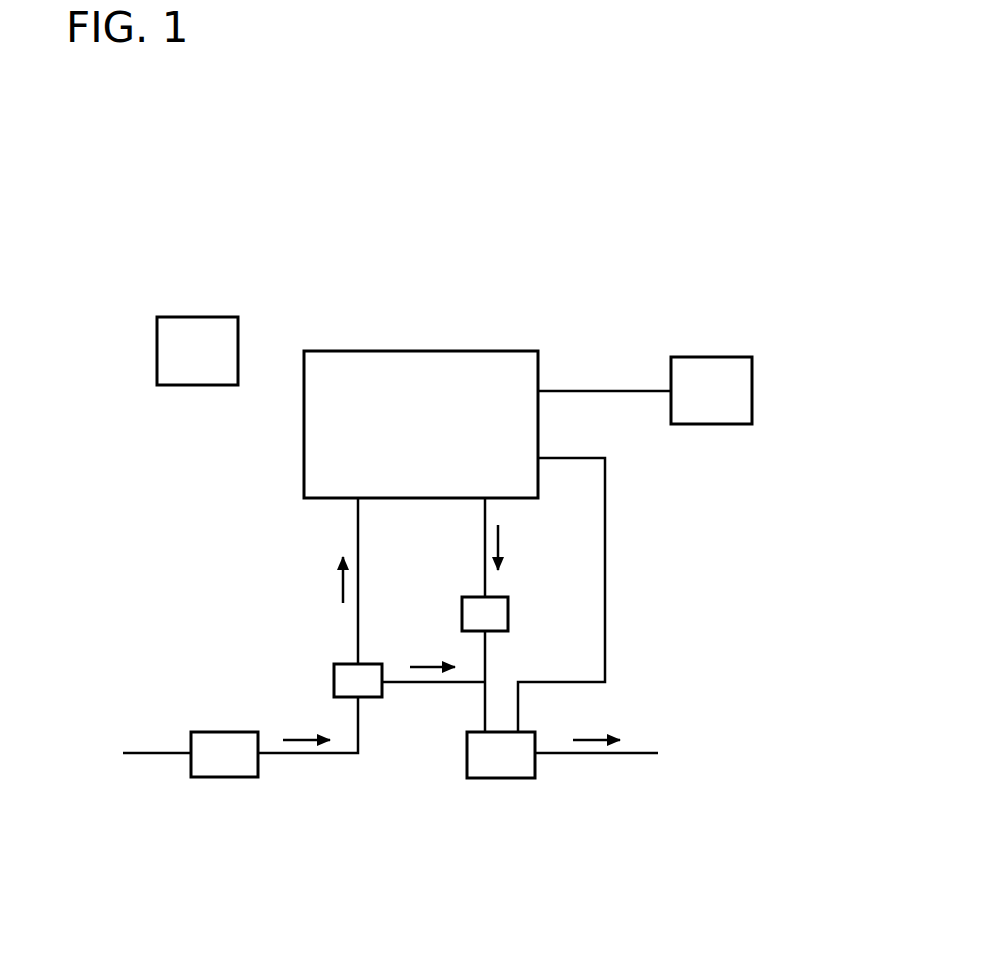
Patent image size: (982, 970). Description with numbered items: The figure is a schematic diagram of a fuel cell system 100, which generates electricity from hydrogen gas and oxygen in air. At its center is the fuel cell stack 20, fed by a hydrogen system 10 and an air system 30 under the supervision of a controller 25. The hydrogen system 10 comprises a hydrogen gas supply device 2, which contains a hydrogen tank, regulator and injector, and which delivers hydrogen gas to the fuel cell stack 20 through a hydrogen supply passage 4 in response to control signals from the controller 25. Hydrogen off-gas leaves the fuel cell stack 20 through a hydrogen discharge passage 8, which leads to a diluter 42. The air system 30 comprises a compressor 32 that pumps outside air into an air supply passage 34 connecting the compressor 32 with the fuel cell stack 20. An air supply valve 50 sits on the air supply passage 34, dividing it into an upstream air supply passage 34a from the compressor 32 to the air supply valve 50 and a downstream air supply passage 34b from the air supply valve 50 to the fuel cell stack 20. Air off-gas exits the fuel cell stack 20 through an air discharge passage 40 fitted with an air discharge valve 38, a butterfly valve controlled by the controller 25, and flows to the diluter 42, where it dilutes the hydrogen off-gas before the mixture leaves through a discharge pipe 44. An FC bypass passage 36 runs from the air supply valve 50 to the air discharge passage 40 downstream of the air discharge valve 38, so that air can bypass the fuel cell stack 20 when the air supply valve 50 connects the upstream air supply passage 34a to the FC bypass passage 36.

The fuel cell system 100 is at (722, 238).
The hydrogen system 10 is at (725, 492).
The fuel cell stack 20 is at (503, 362).
The controller 25 is at (212, 328).
The hydrogen gas supply device 2 is at (725, 368).
The hydrogen supply passage 4 is at (603, 389).
The hydrogen discharge passage 8 is at (605, 548).
The air system 30 is at (195, 563).
The compressor 32 is at (226, 770).
The air supply passage 34 is at (288, 620).
The upstream air supply passage 34a is at (275, 752).
The downstream air supply passage 34b is at (358, 630).
The FC bypass passage 36 is at (437, 684).
The air discharge valve 38 is at (497, 612).
The air discharge passage 40 is at (485, 653).
The diluter 42 is at (500, 768).
The discharge pipe 44 is at (613, 757).
The air supply valve 50 is at (378, 697).